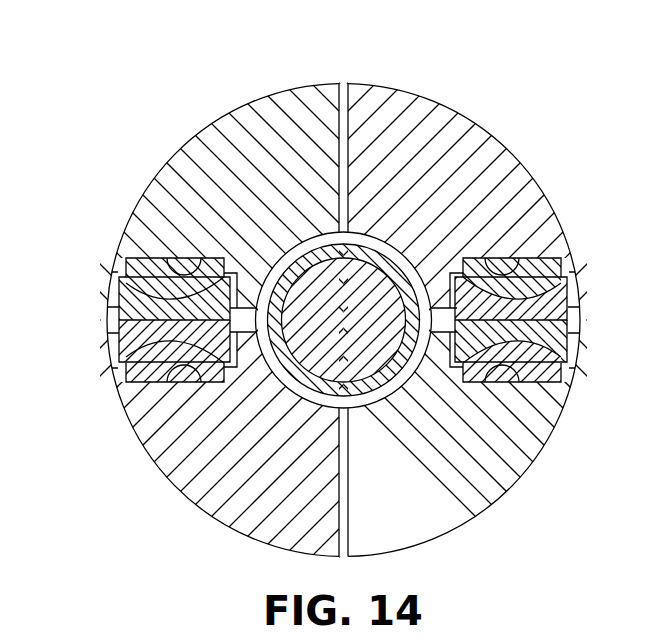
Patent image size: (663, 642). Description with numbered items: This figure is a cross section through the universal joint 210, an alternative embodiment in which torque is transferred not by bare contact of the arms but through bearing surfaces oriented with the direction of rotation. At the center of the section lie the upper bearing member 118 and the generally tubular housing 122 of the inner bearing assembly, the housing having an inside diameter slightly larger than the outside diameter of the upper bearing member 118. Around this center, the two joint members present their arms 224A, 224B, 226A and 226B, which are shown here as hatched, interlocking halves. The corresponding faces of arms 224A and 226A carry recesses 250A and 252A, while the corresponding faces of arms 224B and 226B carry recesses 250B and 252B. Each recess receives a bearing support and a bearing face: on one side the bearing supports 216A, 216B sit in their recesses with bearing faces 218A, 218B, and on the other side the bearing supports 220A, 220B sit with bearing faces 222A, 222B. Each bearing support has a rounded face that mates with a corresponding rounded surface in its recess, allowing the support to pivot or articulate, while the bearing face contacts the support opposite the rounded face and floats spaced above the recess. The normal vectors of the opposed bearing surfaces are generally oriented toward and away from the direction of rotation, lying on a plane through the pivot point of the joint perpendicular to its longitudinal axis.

The universal joint 210 is at (225, 82).
The upper bearing member 118 is at (316, 367).
The housing 122 is at (391, 262).
The bearing support 216A is at (576, 344).
The bearing support 216B is at (575, 266).
The bearing face 218A is at (575, 380).
The bearing face 218B is at (577, 290).
The bearing support 220A is at (111, 344).
The bearing support 220B is at (112, 266).
The bearing face 222A is at (112, 380).
The bearing face 222B is at (110, 290).
The arm 224A is at (192, 138).
The arm 224B is at (501, 496).
The arm 226A is at (186, 496).
The arm 226B is at (500, 143).
The recess 250A is at (486, 256).
The recess 250B is at (201, 386).
The recess 252A is at (487, 386).
The recess 252B is at (199, 256).